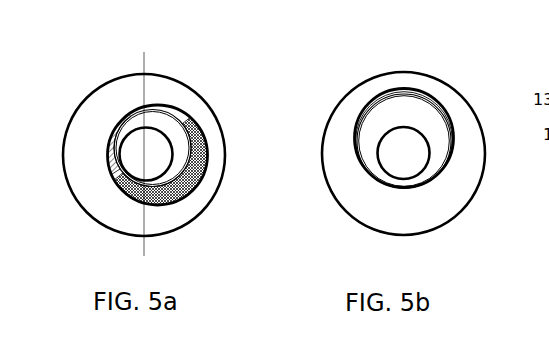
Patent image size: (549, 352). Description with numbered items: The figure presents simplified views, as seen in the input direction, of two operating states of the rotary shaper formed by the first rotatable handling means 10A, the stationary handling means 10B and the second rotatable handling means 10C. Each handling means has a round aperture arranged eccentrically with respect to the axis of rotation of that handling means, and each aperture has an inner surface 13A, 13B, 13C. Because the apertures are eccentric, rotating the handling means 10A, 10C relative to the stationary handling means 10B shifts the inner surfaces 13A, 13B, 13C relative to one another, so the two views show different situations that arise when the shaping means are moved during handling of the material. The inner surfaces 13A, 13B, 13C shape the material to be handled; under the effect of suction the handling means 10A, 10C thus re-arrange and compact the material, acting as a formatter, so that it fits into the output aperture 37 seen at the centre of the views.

In FIG. 5a, the first rotatable handling means 10A is at (173, 88).
In FIG. 5b, the first rotatable handling means 10A is at (445, 92).
In FIG. 5a, the stationary handling means 10B is at (183, 197).
In FIG. 5b, the stationary handling means 10B is at (404, 138).
In FIG. 5a, the second rotatable handling means 10C is at (122, 118).
In FIG. 5a, the inner surface 13A is at (210, 165).
In FIG. 5b, the inner surface 13A is at (452, 153).
In FIG. 5a, the inner surface 13B is at (205, 133).
In FIG. 5b, the inner surface 13B is at (455, 135).
In FIG. 5a, the inner surface 13C is at (117, 133).
In FIG. 5b, the inner surface 13C is at (355, 154).
In FIG. 5a, the output aperture 37 is at (156, 168).
In FIG. 5b, the output aperture 37 is at (414, 168).